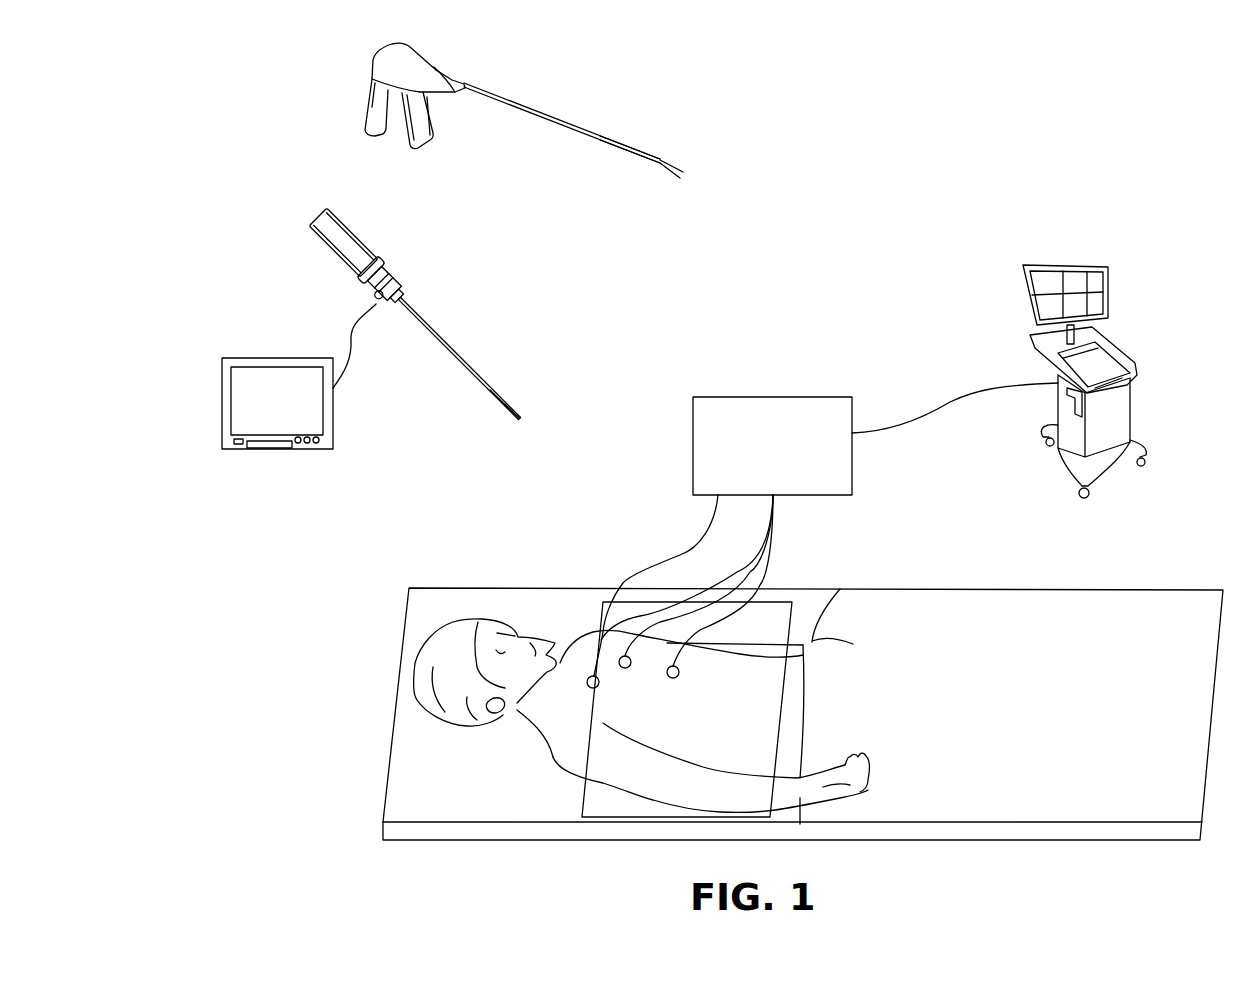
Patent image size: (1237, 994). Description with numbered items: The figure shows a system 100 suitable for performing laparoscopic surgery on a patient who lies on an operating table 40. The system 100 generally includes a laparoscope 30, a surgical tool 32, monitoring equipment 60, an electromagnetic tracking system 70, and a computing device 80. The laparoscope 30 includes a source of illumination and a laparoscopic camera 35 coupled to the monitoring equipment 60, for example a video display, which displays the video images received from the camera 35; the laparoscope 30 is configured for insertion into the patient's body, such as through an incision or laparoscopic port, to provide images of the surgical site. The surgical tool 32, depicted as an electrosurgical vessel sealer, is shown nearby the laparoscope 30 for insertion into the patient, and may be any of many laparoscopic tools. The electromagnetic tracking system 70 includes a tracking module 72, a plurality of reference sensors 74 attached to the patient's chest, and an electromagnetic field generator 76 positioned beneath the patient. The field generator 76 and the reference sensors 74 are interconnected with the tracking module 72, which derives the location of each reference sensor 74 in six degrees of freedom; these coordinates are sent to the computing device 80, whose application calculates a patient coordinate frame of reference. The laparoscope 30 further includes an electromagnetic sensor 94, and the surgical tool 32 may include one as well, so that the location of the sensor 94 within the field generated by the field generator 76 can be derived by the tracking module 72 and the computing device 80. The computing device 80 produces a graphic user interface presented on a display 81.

The system 100 is at (892, 64).
The surgical tool 32 is at (508, 100).
The EM sensor 94 is at (650, 148).
The laparoscope 30 is at (430, 325).
The laparoscopic camera 35 is at (513, 422).
The monitoring equipment 60 is at (242, 450).
The EM tracking system 70 is at (821, 350).
The tracking module 72 is at (787, 462).
The reference sensors 74 is at (595, 687).
The EM field generator 76 is at (598, 810).
The computing device 80 is at (1130, 400).
The display 81 is at (1110, 292).
The operating table 40 is at (398, 762).